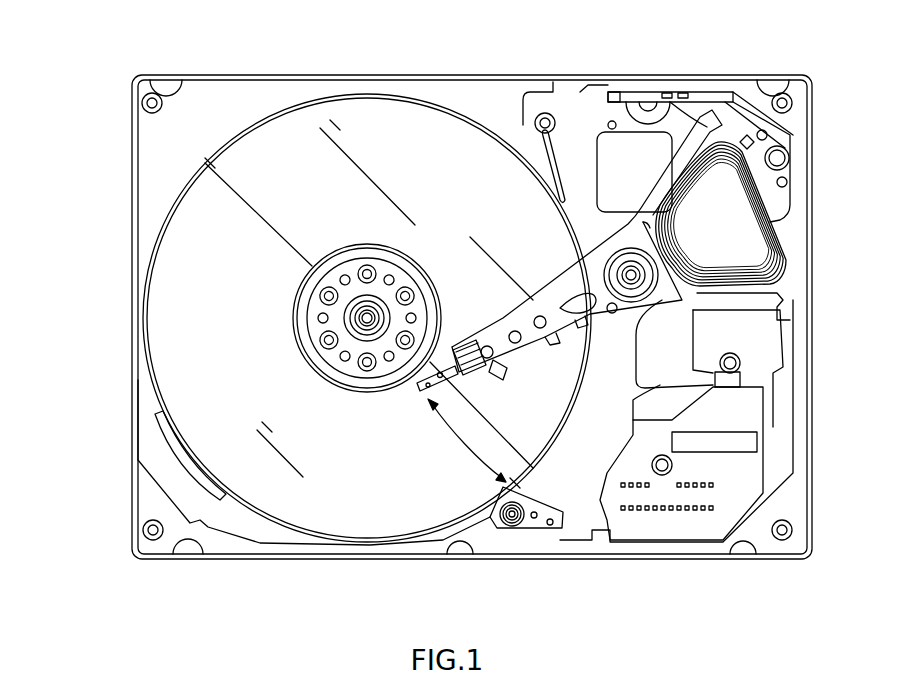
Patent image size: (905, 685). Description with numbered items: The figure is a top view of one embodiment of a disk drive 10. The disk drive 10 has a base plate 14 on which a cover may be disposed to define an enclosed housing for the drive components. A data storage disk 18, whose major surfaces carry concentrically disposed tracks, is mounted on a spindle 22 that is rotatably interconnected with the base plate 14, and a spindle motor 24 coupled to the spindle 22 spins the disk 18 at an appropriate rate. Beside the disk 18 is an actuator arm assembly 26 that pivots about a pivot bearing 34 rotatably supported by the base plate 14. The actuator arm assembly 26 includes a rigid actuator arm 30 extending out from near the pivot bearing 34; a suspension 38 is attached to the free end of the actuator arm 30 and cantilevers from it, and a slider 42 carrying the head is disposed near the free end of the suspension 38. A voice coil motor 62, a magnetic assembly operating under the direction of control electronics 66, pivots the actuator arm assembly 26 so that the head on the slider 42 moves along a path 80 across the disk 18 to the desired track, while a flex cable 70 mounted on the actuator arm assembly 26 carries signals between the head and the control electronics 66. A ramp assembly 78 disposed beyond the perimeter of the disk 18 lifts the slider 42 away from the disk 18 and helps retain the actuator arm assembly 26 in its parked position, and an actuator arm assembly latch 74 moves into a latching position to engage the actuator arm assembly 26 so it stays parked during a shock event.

The disk drive 10 is at (85, 138).
The base plate 14 is at (282, 75).
The data storage disk 18 is at (378, 110).
The spindle 22 is at (400, 252).
The spindle motor 24 is at (345, 300).
The actuator arm assembly 26 is at (550, 298).
The actuator arm 30 is at (527, 345).
The pivot bearing 34 is at (627, 296).
The suspension 38 is at (453, 345).
The slider 42 is at (432, 388).
The voice coil motor 62 is at (780, 222).
The control electronics 66 is at (668, 516).
The flex cable 70 is at (642, 387).
The actuator arm assembly latch 74 is at (712, 96).
The ramp assembly 78 is at (532, 527).
The path 80 is at (463, 448).